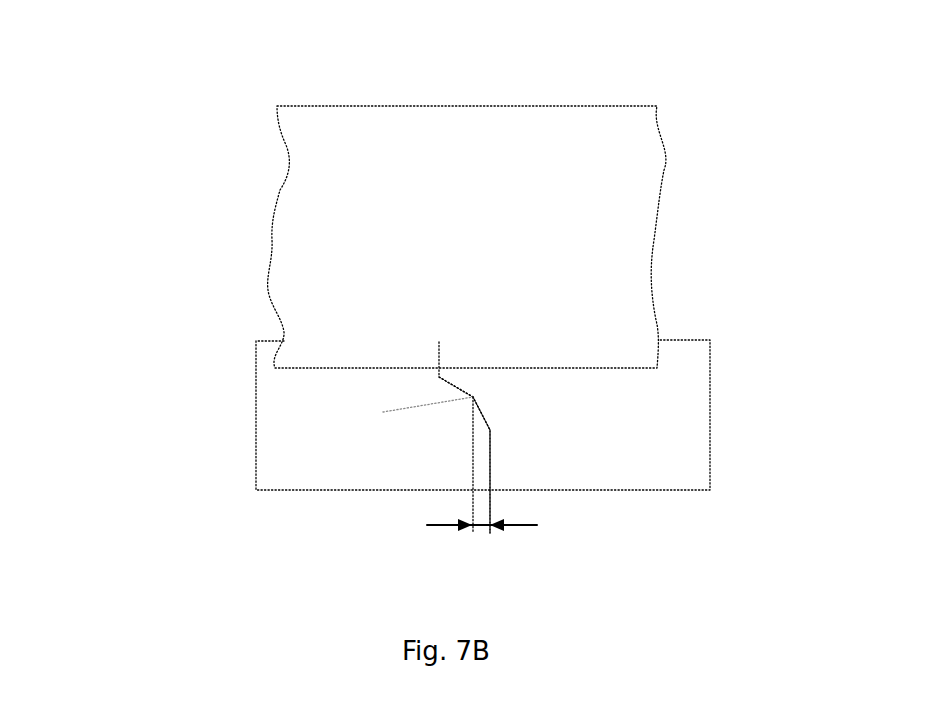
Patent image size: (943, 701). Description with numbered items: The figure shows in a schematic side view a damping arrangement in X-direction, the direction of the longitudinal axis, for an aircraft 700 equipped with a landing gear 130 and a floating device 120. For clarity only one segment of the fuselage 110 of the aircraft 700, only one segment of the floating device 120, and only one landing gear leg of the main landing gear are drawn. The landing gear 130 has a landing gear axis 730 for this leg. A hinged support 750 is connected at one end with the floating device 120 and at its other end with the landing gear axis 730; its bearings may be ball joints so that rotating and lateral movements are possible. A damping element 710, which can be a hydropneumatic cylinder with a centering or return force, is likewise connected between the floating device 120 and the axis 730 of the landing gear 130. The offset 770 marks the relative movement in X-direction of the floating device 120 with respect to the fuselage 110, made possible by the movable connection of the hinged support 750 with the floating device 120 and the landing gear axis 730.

The aircraft 700 is at (110, 88).
The fuselage 110 is at (272, 229).
The floating device 120 is at (290, 552).
The landing gear 130 is at (458, 348).
The damping element 710 is at (383, 412).
The landing gear axis 730 is at (474, 397).
The hinged support 750 is at (490, 425).
The offset 770 is at (482, 525).